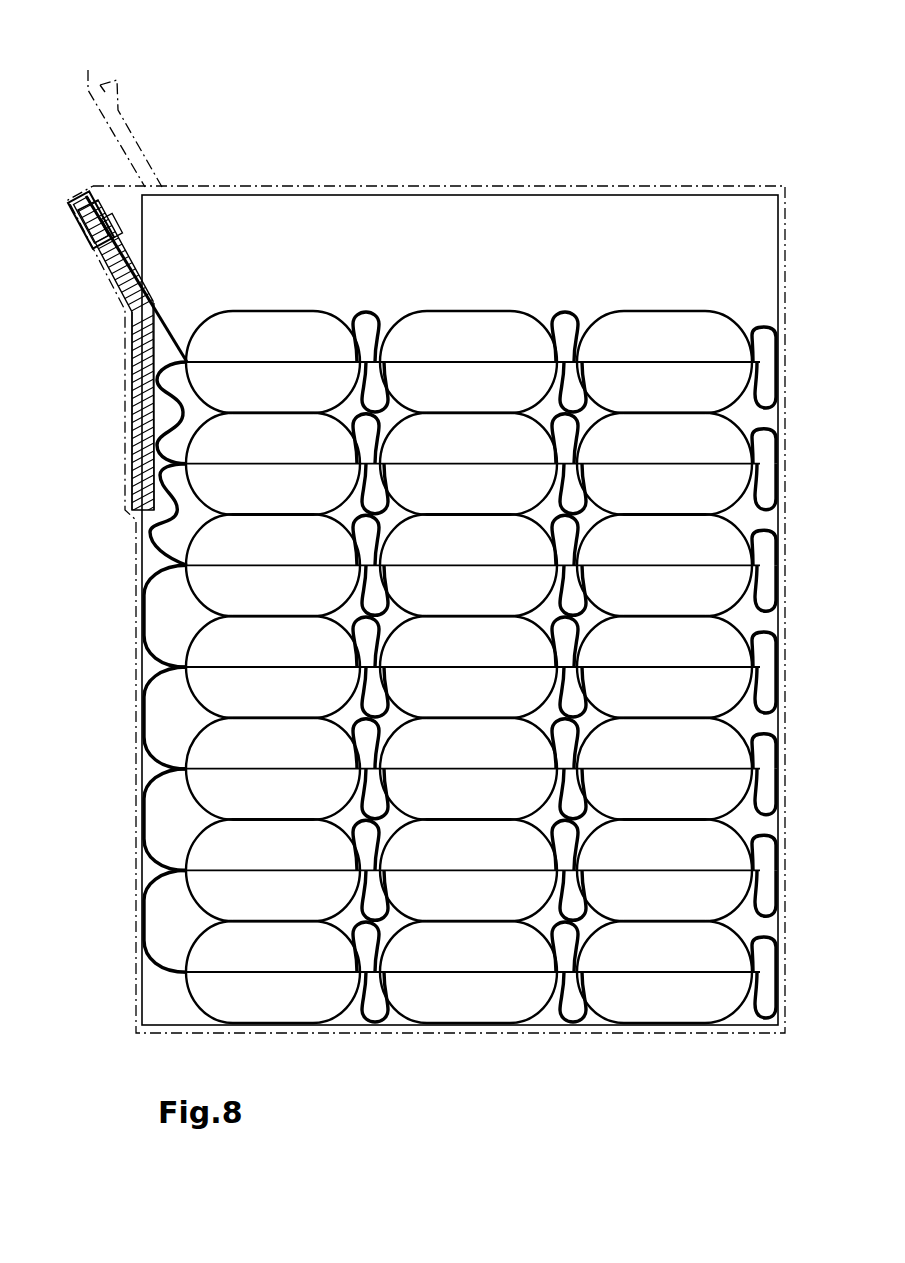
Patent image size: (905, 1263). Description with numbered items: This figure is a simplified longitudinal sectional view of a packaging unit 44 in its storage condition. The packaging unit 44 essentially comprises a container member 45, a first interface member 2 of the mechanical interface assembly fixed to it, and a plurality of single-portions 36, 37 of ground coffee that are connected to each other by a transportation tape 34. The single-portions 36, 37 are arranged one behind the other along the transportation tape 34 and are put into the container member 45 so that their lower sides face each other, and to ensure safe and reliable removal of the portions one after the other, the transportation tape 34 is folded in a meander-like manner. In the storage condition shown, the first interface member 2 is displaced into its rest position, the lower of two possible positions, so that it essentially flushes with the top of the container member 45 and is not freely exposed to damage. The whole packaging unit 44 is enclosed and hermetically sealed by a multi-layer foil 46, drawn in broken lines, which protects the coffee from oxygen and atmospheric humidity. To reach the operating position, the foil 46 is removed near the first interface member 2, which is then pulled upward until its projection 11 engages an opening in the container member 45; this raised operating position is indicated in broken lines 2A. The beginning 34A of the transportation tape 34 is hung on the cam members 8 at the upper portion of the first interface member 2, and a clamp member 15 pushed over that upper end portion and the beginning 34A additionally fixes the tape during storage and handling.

The operating position of the first interface member 2A is at (88, 70).
The packaging unit 44 is at (668, 178).
The container member 45 is at (742, 224).
The multi-layer foil 46 is at (779, 417).
The clamp member 15 is at (82, 205).
The cam members 8 is at (118, 218).
The first interface member 2 is at (102, 242).
The projection 11 is at (128, 492).
The beginning of the transportation tape 34A is at (152, 265).
The single-portion of ground coffee 36 is at (281, 327).
The single-portion of ground coffee 37 is at (491, 328).
The transportation tape 34 is at (354, 307).